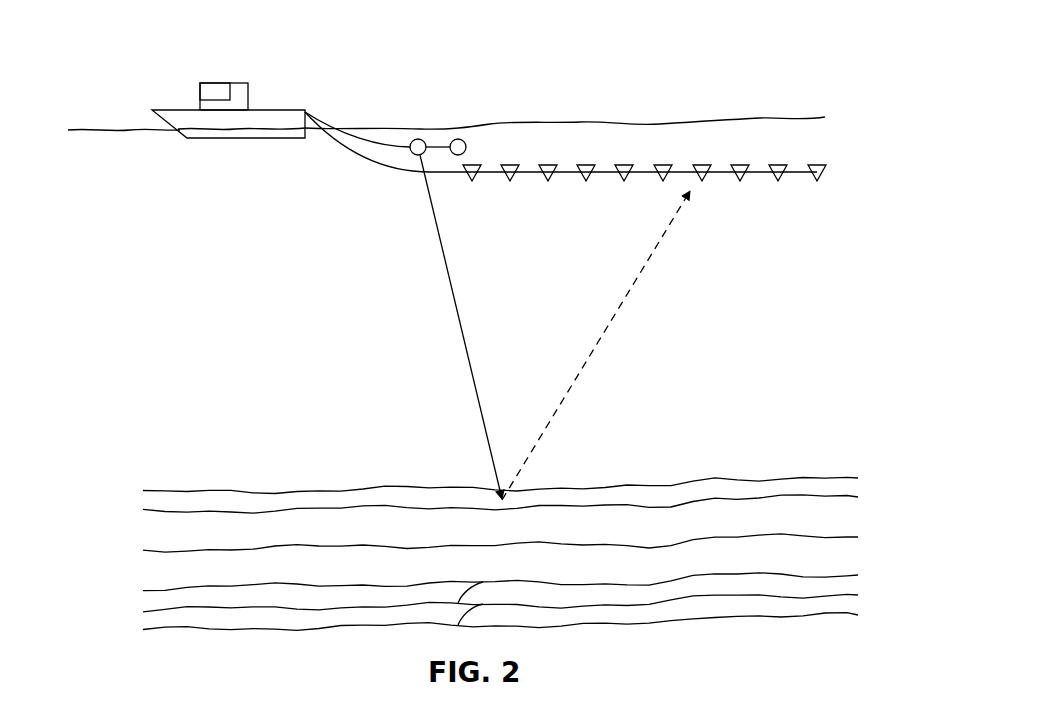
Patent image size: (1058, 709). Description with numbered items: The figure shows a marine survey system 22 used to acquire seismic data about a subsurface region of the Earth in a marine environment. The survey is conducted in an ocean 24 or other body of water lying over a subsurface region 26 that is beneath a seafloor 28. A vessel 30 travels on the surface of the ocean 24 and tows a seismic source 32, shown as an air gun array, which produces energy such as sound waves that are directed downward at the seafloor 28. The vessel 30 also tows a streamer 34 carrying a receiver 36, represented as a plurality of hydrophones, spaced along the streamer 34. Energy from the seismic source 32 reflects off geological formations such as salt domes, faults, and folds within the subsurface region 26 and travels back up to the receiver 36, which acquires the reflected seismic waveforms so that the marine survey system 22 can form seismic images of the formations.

The marine survey system 22 is at (742, 37).
The ocean 24 is at (314, 332).
The subsurface region 26 is at (127, 487).
The seafloor 28 is at (278, 487).
The vessel 30 is at (238, 83).
The seismic source 32 is at (418, 139).
The streamer 34 is at (839, 132).
The receiver 36 is at (510, 164).